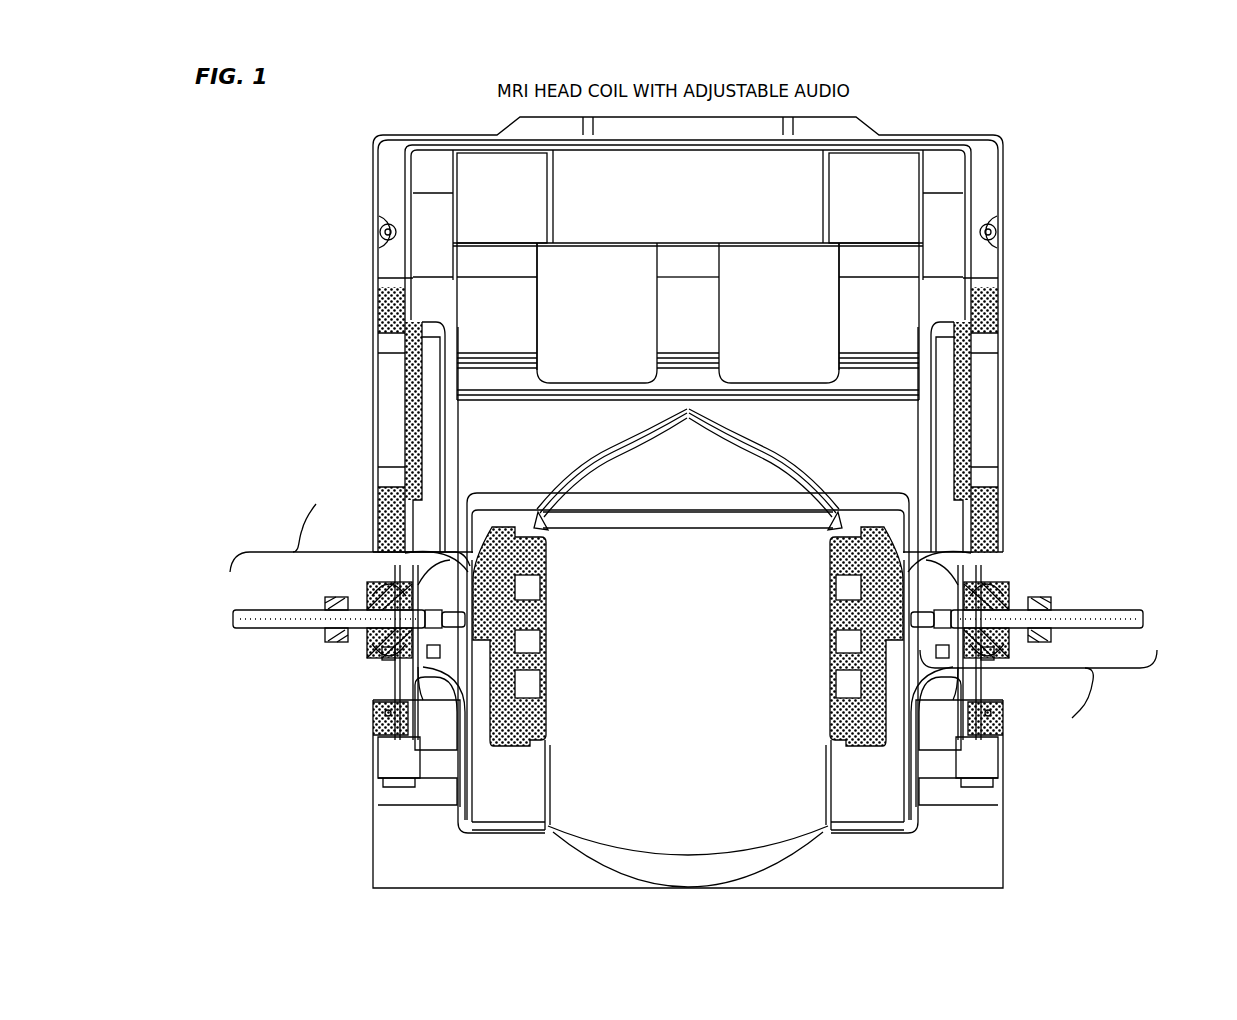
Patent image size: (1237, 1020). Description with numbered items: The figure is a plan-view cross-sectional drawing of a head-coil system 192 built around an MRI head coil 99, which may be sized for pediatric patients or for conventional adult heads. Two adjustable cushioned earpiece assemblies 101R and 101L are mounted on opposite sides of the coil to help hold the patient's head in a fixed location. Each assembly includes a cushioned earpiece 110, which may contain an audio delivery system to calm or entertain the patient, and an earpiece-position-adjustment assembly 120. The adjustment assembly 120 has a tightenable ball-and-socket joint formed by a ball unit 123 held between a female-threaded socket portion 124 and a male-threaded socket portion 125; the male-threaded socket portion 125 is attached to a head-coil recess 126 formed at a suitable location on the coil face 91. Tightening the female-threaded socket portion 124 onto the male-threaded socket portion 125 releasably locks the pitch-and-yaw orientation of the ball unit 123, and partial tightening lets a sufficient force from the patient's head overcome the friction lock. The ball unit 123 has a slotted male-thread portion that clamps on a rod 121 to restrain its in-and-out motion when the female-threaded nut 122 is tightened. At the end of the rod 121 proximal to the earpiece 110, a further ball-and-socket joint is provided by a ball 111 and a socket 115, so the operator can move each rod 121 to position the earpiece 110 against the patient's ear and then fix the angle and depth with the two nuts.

The MRI head coil 99 is at (963, 115).
The head-coil system 192 is at (1150, 128).
The coil face 91 is at (792, 465).
The cushioned earpiece 110 is at (542, 617).
The ball 111 is at (450, 613).
The socket 115 is at (442, 645).
The earpiece-position-adjustment assembly 120 is at (693, 610).
The rod 121 is at (270, 633).
The female-threaded nut 122 is at (325, 640).
The ball unit 123 is at (363, 640).
The female-threaded socket portion 124 is at (367, 657).
The male-threaded socket portion 125 is at (400, 658).
The head-coil recess 126 is at (410, 667).
The adjustable cushioned earpiece assembly 101R is at (318, 600).
The adjustable cushioned earpiece assembly 101L is at (1020, 586).